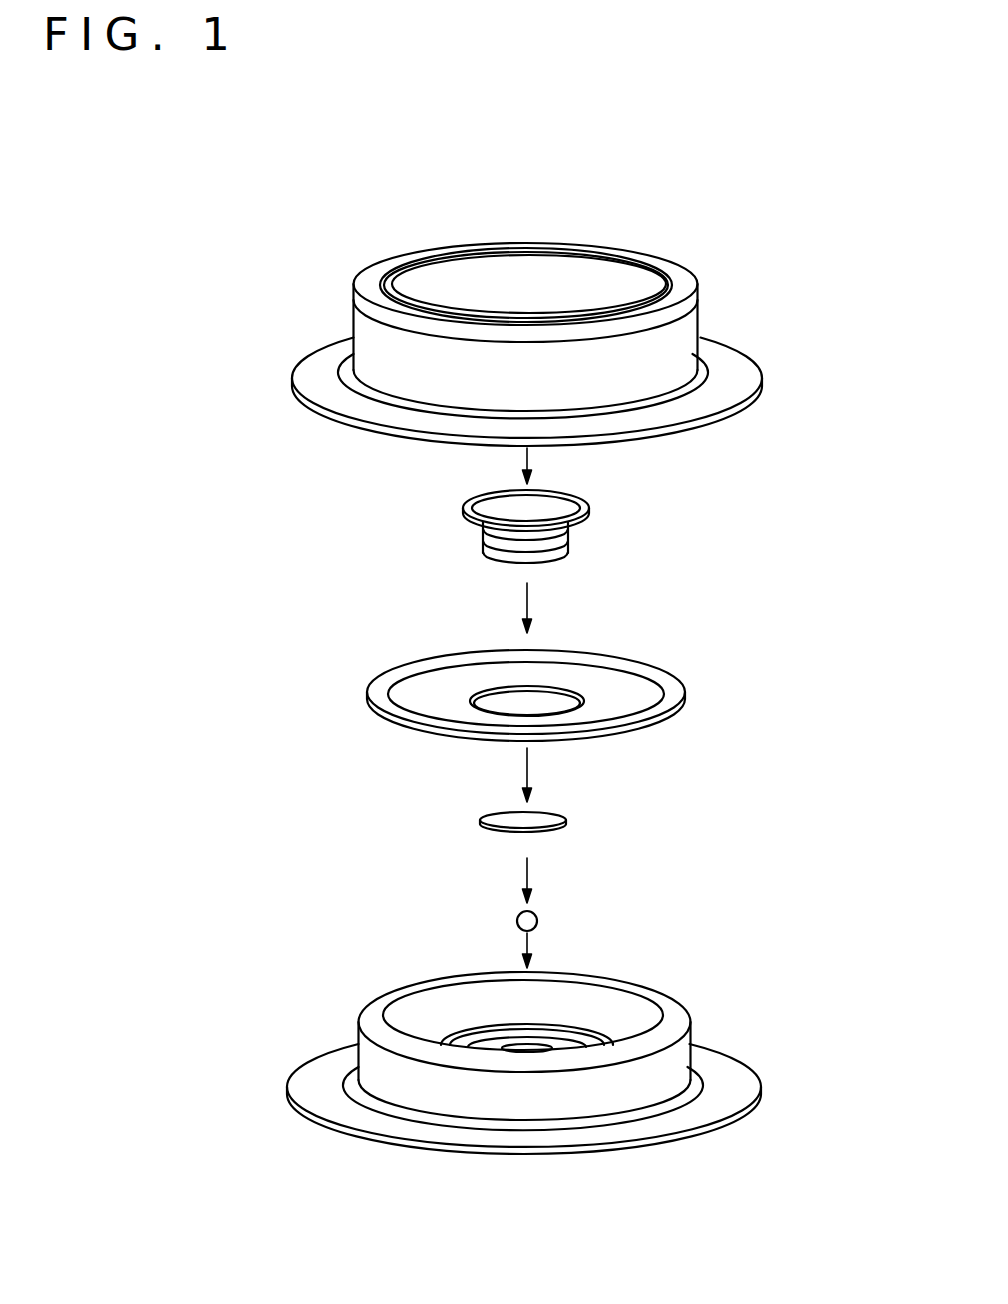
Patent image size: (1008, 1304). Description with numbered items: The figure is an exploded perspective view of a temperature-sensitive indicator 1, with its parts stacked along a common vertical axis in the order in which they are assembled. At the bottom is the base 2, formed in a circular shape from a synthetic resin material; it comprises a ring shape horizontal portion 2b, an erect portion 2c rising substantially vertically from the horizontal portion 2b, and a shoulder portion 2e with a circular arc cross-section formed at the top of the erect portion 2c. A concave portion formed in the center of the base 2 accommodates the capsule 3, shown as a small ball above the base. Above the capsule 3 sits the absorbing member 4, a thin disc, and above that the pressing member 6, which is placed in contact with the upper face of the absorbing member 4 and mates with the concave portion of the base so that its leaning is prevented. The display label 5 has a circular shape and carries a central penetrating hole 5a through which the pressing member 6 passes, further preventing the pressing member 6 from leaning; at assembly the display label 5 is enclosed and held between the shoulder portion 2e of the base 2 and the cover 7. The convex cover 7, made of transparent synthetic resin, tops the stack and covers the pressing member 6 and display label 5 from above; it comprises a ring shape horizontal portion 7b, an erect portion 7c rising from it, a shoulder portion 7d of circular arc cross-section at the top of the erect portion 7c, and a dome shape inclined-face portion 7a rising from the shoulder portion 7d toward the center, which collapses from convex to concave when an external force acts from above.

The temperature-sensitive indicator 1 is at (857, 572).
The base 2 is at (565, 1037).
The horizontal portion 2b is at (730, 1098).
The erect portion 2c is at (673, 1058).
The shoulder portion 2e is at (663, 1005).
The capsule 3 is at (537, 918).
The absorbing member 4 is at (567, 822).
The display label 5 is at (567, 664).
The penetrating hole 5a is at (577, 695).
The pressing member 6 is at (570, 537).
The convex cover 7 is at (573, 313).
The inclined-face portion 7a is at (557, 287).
The horizontal portion 7b is at (740, 392).
The erect portion 7c is at (667, 367).
The shoulder portion 7d is at (678, 287).